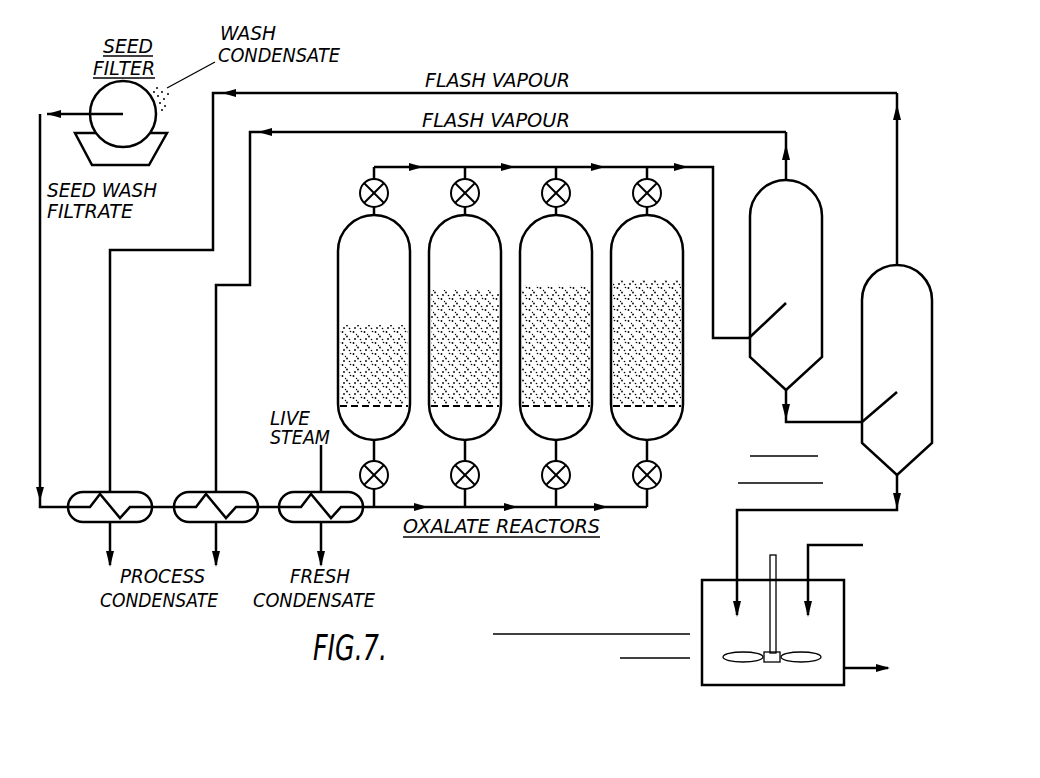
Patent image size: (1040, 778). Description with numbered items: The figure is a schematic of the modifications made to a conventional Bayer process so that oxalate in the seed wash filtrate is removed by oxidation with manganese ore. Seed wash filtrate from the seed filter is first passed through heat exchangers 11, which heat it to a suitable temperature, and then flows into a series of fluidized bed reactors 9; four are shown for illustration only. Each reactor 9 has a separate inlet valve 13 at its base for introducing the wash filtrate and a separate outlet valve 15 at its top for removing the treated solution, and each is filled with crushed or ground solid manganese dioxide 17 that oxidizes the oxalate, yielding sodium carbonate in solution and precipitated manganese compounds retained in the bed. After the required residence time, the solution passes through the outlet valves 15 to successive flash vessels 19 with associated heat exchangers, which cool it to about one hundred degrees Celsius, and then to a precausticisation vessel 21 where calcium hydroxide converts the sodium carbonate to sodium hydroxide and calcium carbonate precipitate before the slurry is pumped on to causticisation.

The fluidized bed reactor 9 is at (357, 232).
The heat exchanger 11 is at (98, 492).
The inlet valve 13 is at (388, 478).
The outlet valve 15 is at (360, 193).
The manganese dioxide 17 is at (370, 345).
The flash vessel 19 is at (812, 213).
The precausticisation vessel 21 is at (830, 612).